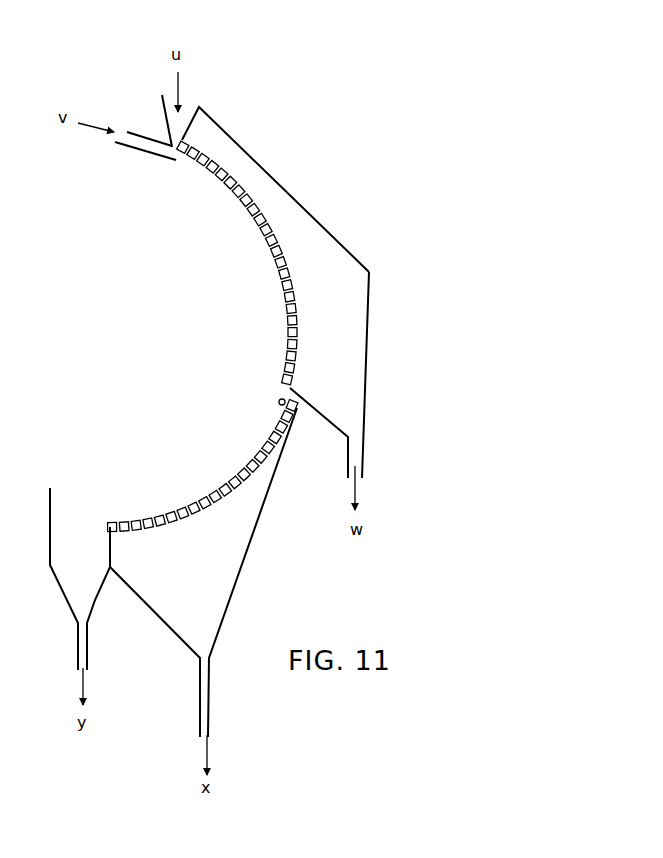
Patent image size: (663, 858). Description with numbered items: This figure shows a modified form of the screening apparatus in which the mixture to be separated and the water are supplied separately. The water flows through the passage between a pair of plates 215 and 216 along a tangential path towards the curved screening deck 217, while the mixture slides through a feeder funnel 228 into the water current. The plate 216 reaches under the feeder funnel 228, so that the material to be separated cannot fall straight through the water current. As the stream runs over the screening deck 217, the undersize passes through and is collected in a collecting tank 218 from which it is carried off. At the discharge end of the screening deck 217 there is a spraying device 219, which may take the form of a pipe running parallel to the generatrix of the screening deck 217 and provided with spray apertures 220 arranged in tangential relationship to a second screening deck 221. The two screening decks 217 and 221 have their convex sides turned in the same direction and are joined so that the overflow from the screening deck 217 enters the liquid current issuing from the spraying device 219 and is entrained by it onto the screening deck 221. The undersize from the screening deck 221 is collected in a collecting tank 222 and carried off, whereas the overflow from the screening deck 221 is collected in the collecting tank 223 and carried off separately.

The plate 215 is at (142, 132).
The plate 216 is at (133, 151).
The screening deck 217 is at (282, 267).
The collecting tank 218 is at (367, 303).
The spraying device 219 is at (279, 402).
The spray apertures 220 is at (282, 407).
The screening deck 221 is at (196, 502).
The collecting tank 222 is at (156, 612).
The collecting tank 223 is at (52, 541).
The feeder funnel 228 is at (183, 116).